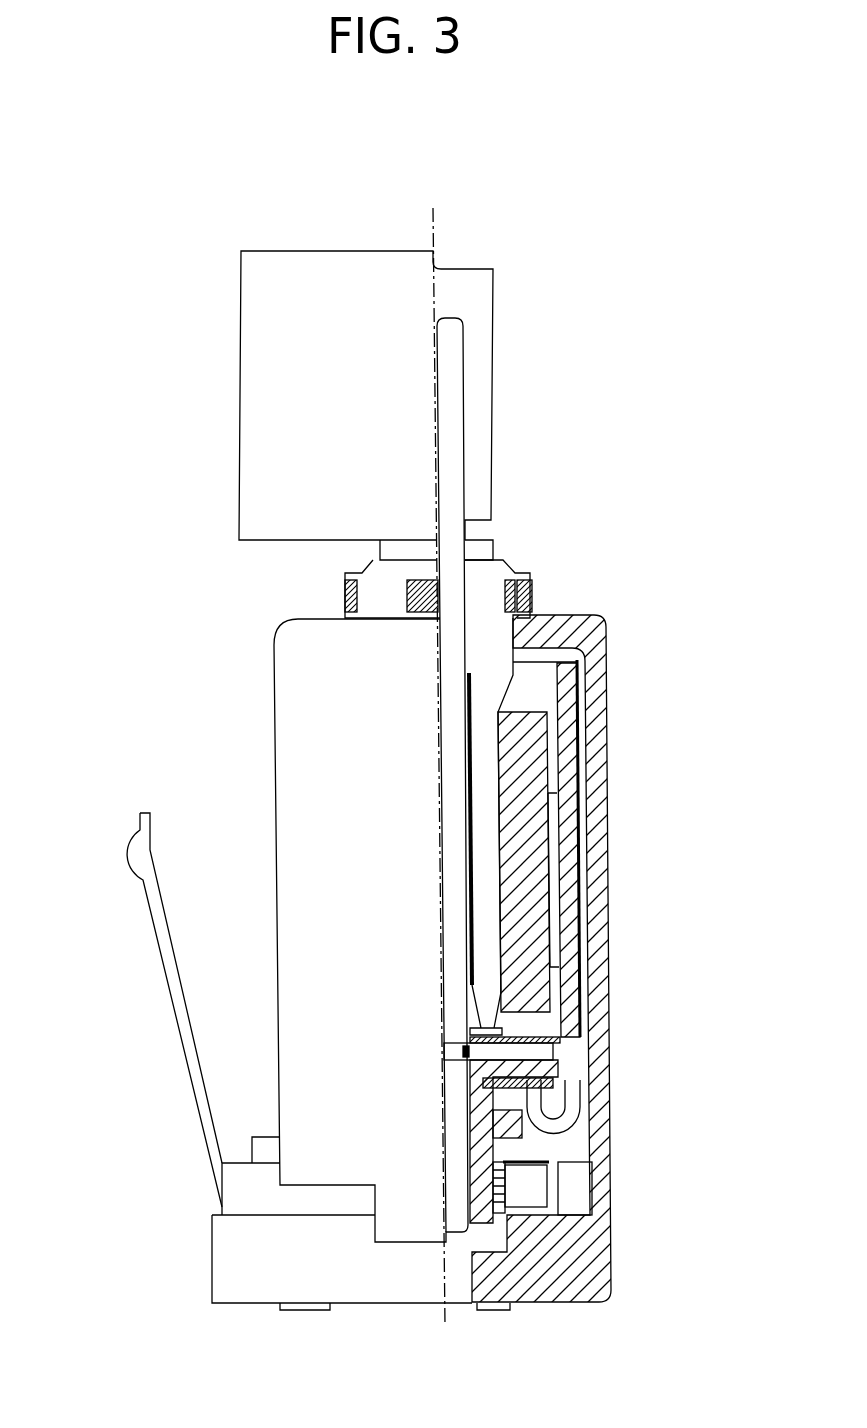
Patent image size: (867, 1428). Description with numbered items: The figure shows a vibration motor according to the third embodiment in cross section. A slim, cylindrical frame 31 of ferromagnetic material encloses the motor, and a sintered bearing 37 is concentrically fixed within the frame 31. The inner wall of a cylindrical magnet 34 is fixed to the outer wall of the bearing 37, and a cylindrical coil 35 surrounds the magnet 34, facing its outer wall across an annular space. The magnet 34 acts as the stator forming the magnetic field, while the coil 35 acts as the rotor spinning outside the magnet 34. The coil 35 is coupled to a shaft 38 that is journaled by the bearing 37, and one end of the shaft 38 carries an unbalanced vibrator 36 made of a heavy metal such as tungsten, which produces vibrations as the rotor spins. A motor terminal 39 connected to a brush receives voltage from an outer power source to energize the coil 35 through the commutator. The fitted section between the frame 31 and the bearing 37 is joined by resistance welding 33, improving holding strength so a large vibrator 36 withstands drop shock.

The frame 31 is at (601, 703).
The resistance welding 33 is at (515, 575).
The magnet 34 is at (520, 848).
The coil 35 is at (572, 905).
The vibrator 36 is at (313, 338).
The bearing 37 is at (492, 645).
The shaft 38 is at (450, 408).
The motor terminal 39 is at (167, 973).